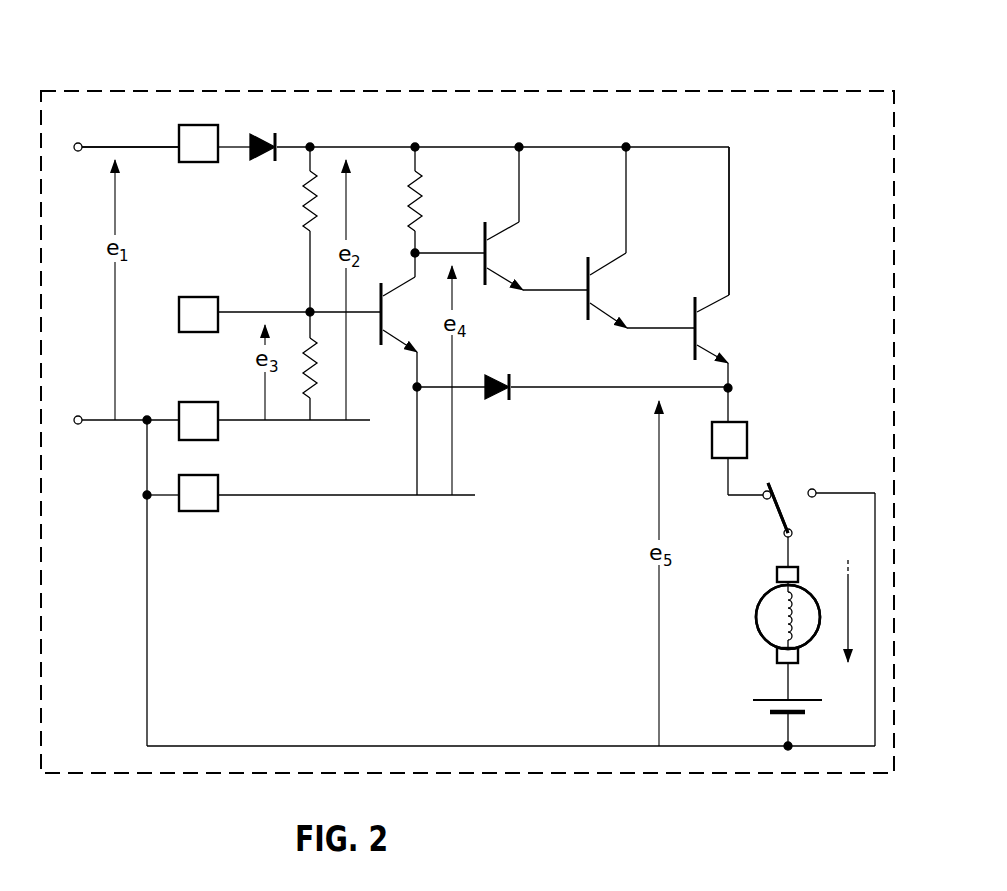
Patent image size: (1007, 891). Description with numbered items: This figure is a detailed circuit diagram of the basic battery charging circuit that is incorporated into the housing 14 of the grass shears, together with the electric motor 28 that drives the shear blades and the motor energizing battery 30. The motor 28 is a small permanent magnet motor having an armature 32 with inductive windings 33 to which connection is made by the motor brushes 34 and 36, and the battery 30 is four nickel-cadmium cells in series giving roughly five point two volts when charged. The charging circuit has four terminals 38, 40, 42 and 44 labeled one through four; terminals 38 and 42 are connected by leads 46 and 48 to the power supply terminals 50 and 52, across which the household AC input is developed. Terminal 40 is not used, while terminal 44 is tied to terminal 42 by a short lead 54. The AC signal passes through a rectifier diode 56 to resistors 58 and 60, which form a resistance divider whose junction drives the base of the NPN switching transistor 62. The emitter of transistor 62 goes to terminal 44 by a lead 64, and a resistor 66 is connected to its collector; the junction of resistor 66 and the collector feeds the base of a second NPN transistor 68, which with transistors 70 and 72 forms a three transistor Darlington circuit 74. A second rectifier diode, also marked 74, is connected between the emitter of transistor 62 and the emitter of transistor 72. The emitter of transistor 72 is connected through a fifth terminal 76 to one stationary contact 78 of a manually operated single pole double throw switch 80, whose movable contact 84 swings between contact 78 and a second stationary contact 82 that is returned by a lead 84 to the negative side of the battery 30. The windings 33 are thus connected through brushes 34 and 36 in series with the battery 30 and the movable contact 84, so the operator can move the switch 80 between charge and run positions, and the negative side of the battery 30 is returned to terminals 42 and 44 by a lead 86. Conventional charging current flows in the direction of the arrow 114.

The housing 14 is at (127, 90).
The electric motor 28 is at (756, 610).
The battery 30 is at (775, 714).
The armature 32 is at (810, 597).
The inductive windings 33 is at (785, 620).
The motor brush 34 is at (777, 573).
The motor brush 36 is at (427, 134).
The terminal 38 is at (205, 163).
The terminal 40 is at (196, 297).
The terminal 42 is at (205, 402).
The terminal 44 is at (207, 511).
The lead 46 is at (146, 146).
The lead 48 is at (155, 418).
The power supply terminal 50 is at (78, 151).
The power supply terminal 52 is at (78, 424).
The short lead 54 is at (146, 447).
The rectifier diode 56 is at (264, 159).
The resistor 58 is at (303, 233).
The resistor 60 is at (304, 347).
The NPN junction transistor 62 is at (373, 296).
The lead 64 is at (332, 496).
The resistor 66 is at (408, 200).
The NPN junction transistor 68 is at (477, 236).
The transistor 70 is at (579, 273).
The transistor 72 is at (682, 310).
The Darlington circuit 74 is at (744, 183).
The fifth terminal 76 is at (712, 436).
The stationary contact 78 is at (766, 481).
The single pole double throw switch 80 is at (791, 457).
The second stationary contact 82 is at (812, 497).
The movable contact 84 is at (777, 517).
The lead 86 is at (147, 663).
The arrow 114 is at (840, 627).